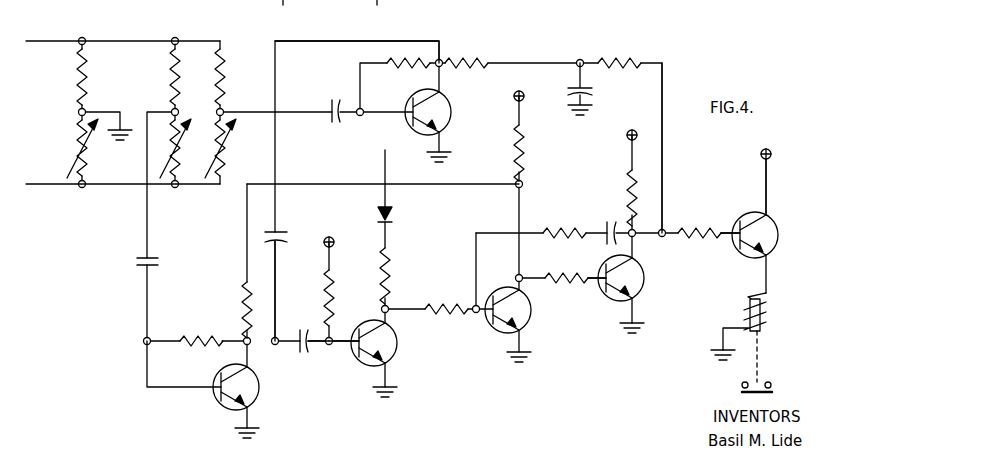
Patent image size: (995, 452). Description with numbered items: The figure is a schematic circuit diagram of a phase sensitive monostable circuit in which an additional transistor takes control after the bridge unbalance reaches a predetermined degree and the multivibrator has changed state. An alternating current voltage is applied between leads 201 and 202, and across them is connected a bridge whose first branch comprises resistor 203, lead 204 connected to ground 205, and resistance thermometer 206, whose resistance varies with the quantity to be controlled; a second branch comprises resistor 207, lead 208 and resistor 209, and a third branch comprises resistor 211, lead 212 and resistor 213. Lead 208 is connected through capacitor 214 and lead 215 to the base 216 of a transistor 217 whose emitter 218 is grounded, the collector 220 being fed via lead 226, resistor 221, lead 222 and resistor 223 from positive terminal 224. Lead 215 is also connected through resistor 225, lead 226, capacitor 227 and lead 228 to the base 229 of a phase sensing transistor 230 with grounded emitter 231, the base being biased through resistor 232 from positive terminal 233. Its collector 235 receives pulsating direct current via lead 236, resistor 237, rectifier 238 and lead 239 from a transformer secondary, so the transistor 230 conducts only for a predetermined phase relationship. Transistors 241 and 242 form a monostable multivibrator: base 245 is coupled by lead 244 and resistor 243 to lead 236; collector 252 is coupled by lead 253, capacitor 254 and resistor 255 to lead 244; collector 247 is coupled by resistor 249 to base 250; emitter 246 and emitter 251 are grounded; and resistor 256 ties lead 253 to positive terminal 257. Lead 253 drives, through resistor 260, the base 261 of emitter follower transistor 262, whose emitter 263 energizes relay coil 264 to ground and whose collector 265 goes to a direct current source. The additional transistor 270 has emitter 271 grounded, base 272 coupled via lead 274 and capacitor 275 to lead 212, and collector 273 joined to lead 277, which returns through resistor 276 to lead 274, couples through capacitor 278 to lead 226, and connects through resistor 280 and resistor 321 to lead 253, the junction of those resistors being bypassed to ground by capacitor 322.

The lead 201 is at (57, 41).
The lead 202 is at (47, 184).
The resistor 203 is at (77, 75).
The lead 204 is at (78, 112).
The ground 205 is at (122, 142).
The resistance thermometer 206 is at (77, 151).
The resistor 207 is at (172, 70).
The lead 208 is at (171, 109).
The resistor 209 is at (176, 168).
The resistor 211 is at (225, 60).
The lead 212 is at (248, 113).
The resistor 213 is at (227, 158).
The capacitor 214 is at (160, 262).
The lead 215 is at (163, 389).
The base 216 is at (222, 379).
The transistor 217 is at (258, 405).
The emitter 218 is at (229, 410).
The collector 220 is at (260, 389).
The resistor 221 is at (243, 297).
The lead 222 is at (523, 205).
The resistor 223 is at (527, 145).
The positive terminal 224 is at (531, 86).
The resistor 225 is at (197, 335).
The lead 226 is at (297, 297).
The capacitor 227 is at (305, 352).
The lead 228 is at (327, 330).
The base 229 is at (337, 330).
The phase sensing transistor 230 is at (393, 360).
The emitter 231 is at (365, 372).
The resistor 232 is at (325, 278).
The positive terminal 233 is at (333, 238).
The collector 235 is at (398, 338).
The lead 236 is at (407, 305).
The resistor 237 is at (392, 262).
The rectifier 238 is at (393, 212).
The lead 239 is at (385, 163).
The transistor 241 is at (533, 325).
The transistor 242 is at (643, 286).
The resistor 243 is at (439, 307).
The lead 244 is at (474, 249).
The base 245 is at (490, 322).
The emitter 246 is at (505, 333).
The collector 247 is at (532, 302).
The resistor 249 is at (556, 273).
The base 250 is at (608, 270).
The emitter 251 is at (612, 298).
The collector 252 is at (630, 262).
The lead 253 is at (664, 175).
The capacitor 254 is at (608, 225).
The resistor 255 is at (574, 226).
The resistor 256 is at (626, 172).
The positive terminal 257 is at (627, 135).
The resistor 260 is at (697, 228).
The base 261 is at (732, 255).
The emitter follower transistor 262 is at (760, 233).
The emitter 263 is at (768, 254).
The relay coil 264 is at (768, 321).
The collector 265 is at (765, 217).
The additional transistor 270 is at (450, 122).
The emitter 271 is at (417, 130).
The base 272 is at (412, 102).
The collector 273 is at (445, 98).
The lead 274 is at (362, 118).
The capacitor 275 is at (330, 100).
The resistor 276 is at (392, 60).
The lead 277 is at (433, 41).
The capacitor 278 is at (293, 236).
The resistor 280 is at (486, 60).
The resistor 321 is at (628, 60).
The capacitor 322 is at (594, 92).